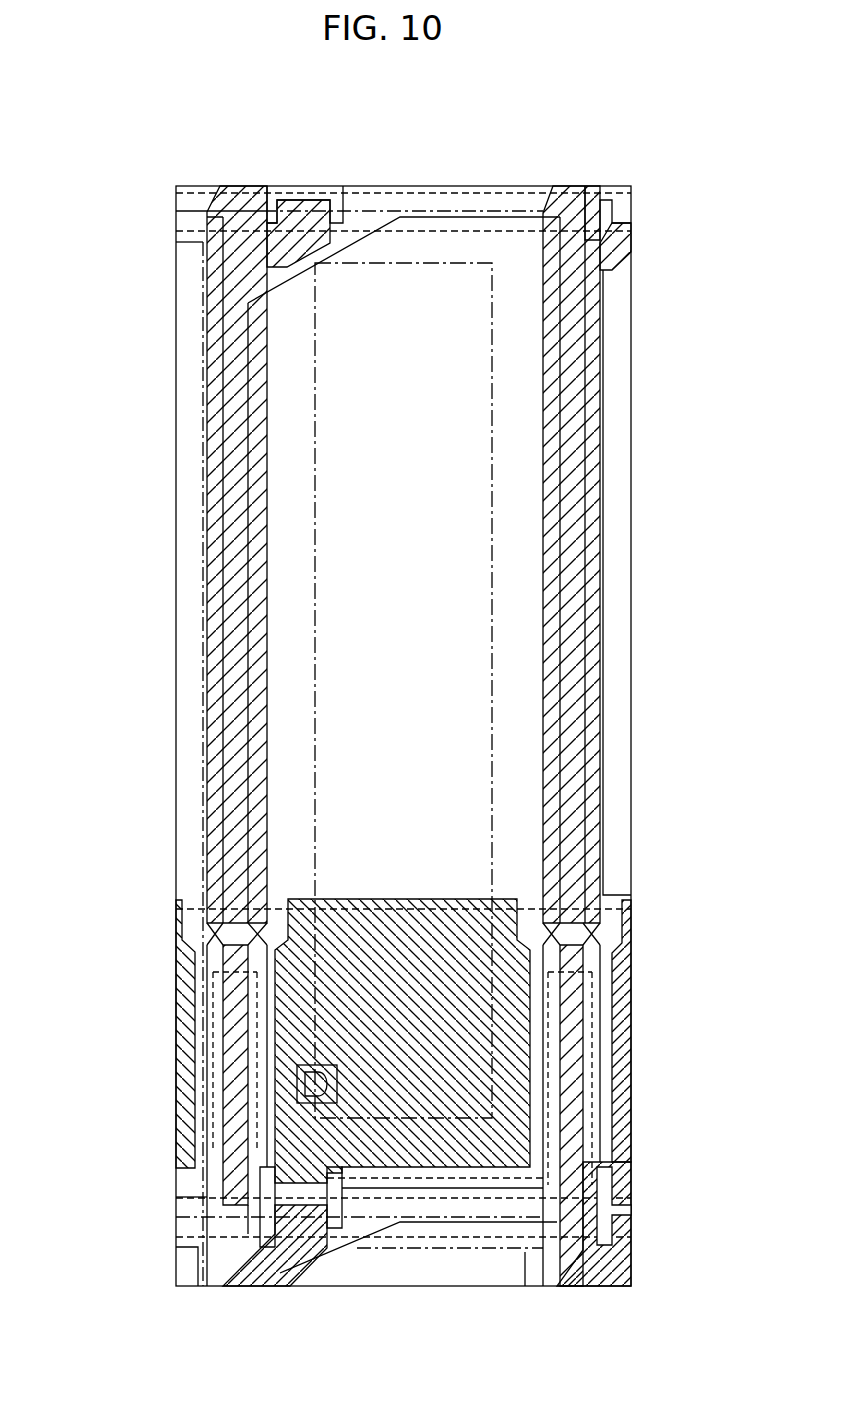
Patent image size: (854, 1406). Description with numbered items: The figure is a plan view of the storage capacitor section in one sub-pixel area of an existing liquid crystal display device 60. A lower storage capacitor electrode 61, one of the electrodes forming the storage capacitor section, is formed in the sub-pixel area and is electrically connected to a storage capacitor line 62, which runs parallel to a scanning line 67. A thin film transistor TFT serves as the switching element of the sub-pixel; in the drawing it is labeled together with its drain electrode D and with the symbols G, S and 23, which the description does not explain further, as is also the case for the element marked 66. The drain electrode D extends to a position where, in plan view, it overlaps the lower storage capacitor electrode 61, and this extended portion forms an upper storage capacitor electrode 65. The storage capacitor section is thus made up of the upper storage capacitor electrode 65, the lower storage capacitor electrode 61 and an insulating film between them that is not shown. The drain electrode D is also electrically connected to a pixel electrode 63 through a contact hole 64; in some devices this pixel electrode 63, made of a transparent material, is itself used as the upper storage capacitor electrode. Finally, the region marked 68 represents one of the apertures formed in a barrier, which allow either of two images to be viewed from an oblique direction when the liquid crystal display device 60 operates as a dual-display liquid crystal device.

The liquid crystal display device 60 is at (298, 102).
The lower storage capacitor electrode 61 is at (550, 1065).
The storage capacitor line 62 is at (235, 918).
The pixel electrode 63 is at (455, 330).
The contact hole 64 is at (315, 1082).
The upper storage capacitor electrode 65 is at (335, 897).
The capacitor line 66 is at (225, 360).
The scanning line 67 is at (508, 1210).
The aperture 68 is at (437, 240).
The drain electrode D is at (297, 1170).
The semiconductor layer 23 is at (293, 1193).
The gate electrode G is at (283, 1225).
The source electrode S is at (290, 1228).
The thin film transistor TFT is at (116, 1277).